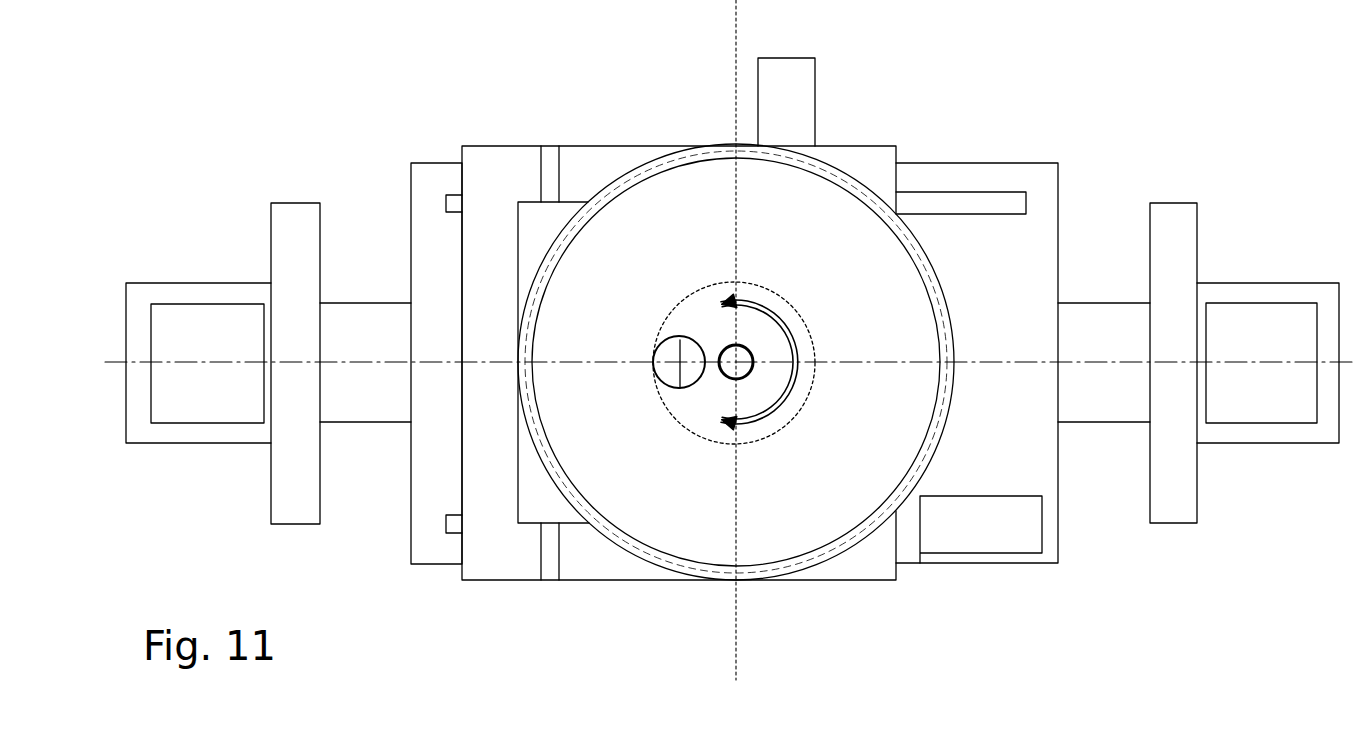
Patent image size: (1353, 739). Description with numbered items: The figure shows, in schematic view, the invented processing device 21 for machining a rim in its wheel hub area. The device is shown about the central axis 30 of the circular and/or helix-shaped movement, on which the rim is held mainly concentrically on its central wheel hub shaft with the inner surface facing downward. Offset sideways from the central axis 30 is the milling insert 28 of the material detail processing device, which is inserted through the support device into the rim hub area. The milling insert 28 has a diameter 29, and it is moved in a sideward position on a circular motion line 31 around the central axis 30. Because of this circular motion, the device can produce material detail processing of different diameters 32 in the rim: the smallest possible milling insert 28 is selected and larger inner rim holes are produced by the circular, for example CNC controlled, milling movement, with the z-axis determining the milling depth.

The processing device 21 is at (442, 92).
The milling insert 28 is at (670, 345).
The diameter 29 is at (680, 388).
The central axis 30 is at (728, 350).
The circular motion line 31 is at (760, 413).
The diameter 32 is at (762, 370).